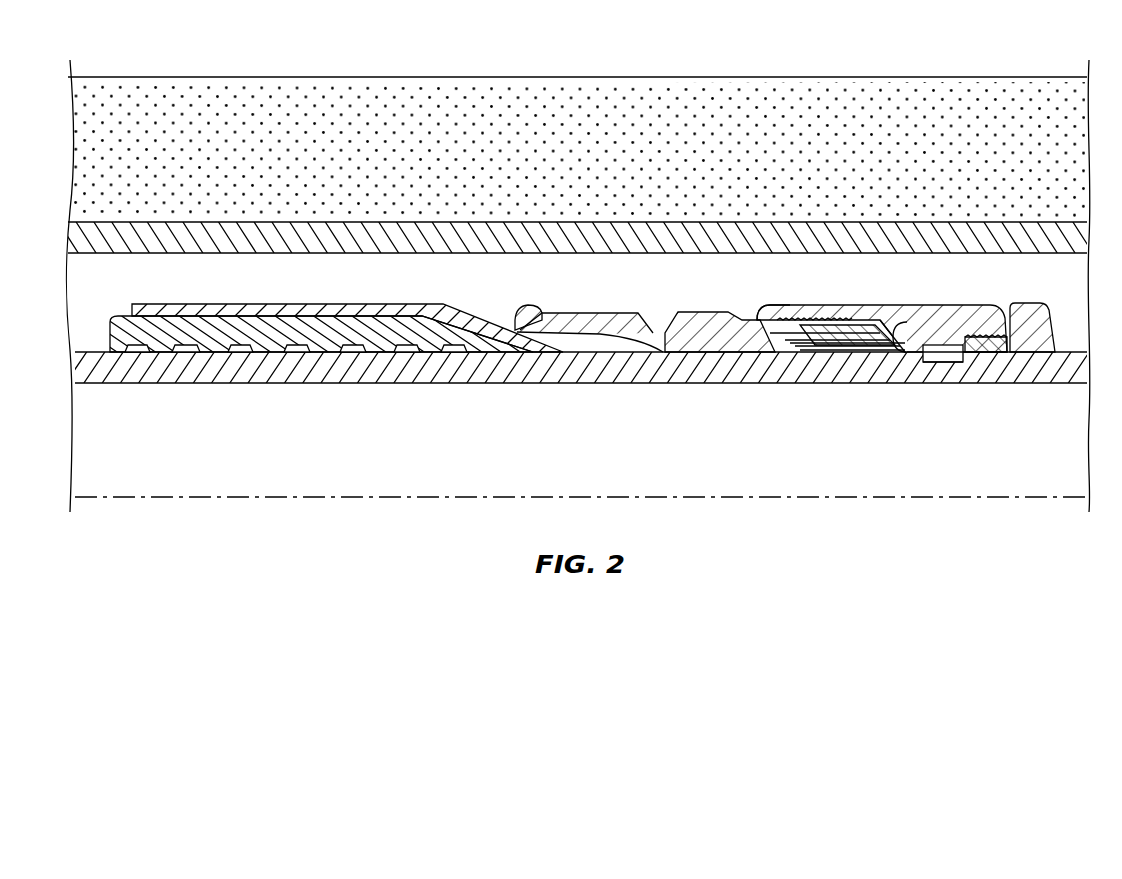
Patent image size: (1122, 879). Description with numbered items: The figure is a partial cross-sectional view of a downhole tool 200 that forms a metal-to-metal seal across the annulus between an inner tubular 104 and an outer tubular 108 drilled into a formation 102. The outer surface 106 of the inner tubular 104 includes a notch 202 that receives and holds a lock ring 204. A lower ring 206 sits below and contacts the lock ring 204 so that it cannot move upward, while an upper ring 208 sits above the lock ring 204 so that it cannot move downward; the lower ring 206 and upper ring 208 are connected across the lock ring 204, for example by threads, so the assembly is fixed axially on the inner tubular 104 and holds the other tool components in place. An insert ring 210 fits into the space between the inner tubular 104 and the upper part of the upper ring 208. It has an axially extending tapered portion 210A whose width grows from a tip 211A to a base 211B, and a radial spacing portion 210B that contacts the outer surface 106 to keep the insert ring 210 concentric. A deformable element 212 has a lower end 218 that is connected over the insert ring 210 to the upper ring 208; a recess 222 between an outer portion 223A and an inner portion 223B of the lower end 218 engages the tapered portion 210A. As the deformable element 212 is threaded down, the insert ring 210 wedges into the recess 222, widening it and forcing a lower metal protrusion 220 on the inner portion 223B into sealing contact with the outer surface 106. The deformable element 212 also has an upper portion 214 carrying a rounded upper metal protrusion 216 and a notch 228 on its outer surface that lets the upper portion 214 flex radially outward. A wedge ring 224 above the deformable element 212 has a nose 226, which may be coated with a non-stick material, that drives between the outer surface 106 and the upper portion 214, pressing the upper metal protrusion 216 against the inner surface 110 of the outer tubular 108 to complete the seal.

The formation 102 is at (942, 98).
The inner tubular 104 is at (188, 372).
The outer surface 106 is at (132, 352).
The outer tubular 108 is at (275, 235).
The inner surface 110 is at (393, 235).
The downhole tool 200 is at (647, 313).
The notch 202 is at (943, 366).
The lock ring 204 is at (952, 363).
The lower ring 206 is at (1030, 318).
The upper ring 208 is at (965, 337).
The insert ring 210 is at (888, 345).
The tapered portion 210A is at (838, 333).
The radial spacing portion 210B is at (893, 352).
The tip 211A is at (797, 305).
The base 211B is at (930, 325).
The deformable element 212 is at (698, 325).
The upper portion 214 is at (581, 313).
The upper metal protrusion 216 is at (525, 303).
The lower end 218 is at (833, 352).
The lower metal protrusion 220 is at (862, 346).
The recess 222 is at (812, 346).
The outer portion 223A is at (830, 333).
The inner portion 223B is at (800, 340).
The wedge ring 224 is at (272, 330).
The nose 226 is at (512, 343).
The notch 228 is at (662, 318).